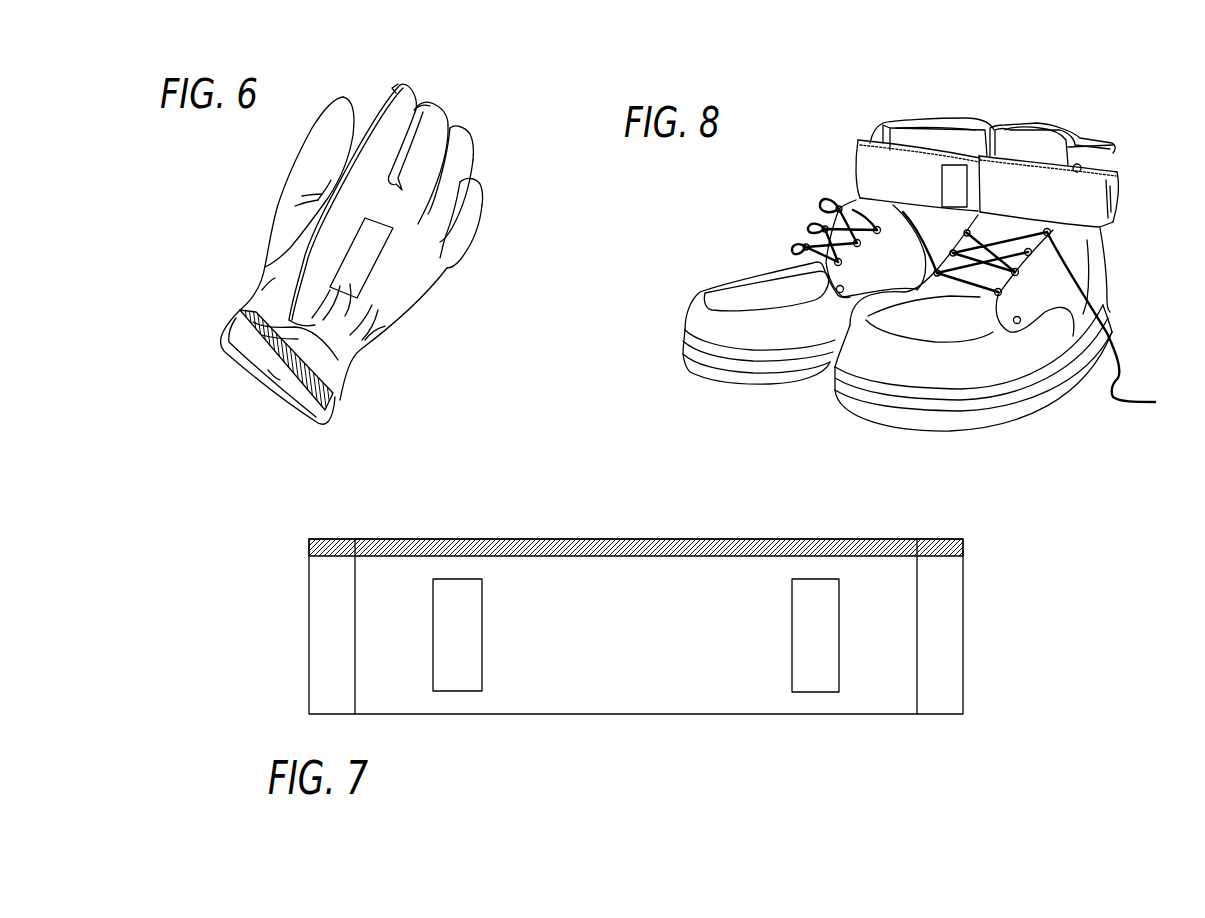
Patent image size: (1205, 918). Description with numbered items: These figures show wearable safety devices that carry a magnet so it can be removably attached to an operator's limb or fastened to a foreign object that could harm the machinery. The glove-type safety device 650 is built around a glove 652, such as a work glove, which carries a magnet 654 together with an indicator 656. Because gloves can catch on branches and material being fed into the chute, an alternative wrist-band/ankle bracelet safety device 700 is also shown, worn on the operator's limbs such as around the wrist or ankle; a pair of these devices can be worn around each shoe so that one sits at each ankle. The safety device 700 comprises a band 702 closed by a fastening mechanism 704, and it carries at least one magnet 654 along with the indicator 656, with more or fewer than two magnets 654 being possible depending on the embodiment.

In FIG. 6, the glove-type safety device 650 is at (395, 230).
In FIG. 6, the glove 652 is at (435, 110).
In FIG. 6, the magnet 654 is at (367, 258).
In FIG. 7, the magnet 654 is at (482, 634).
In FIG. 6, the indicator 656 is at (335, 401).
In FIG. 7, the indicator 656 is at (309, 547).
In FIG. 7, the wrist-band/ankle bracelet safety device 700 is at (634, 556).
In FIG. 8, the wrist-band/ankle bracelet safety device 700 is at (862, 176).
In FIG. 7, the band 702 is at (642, 592).
In FIG. 7, the fastening mechanism 704 is at (325, 627).